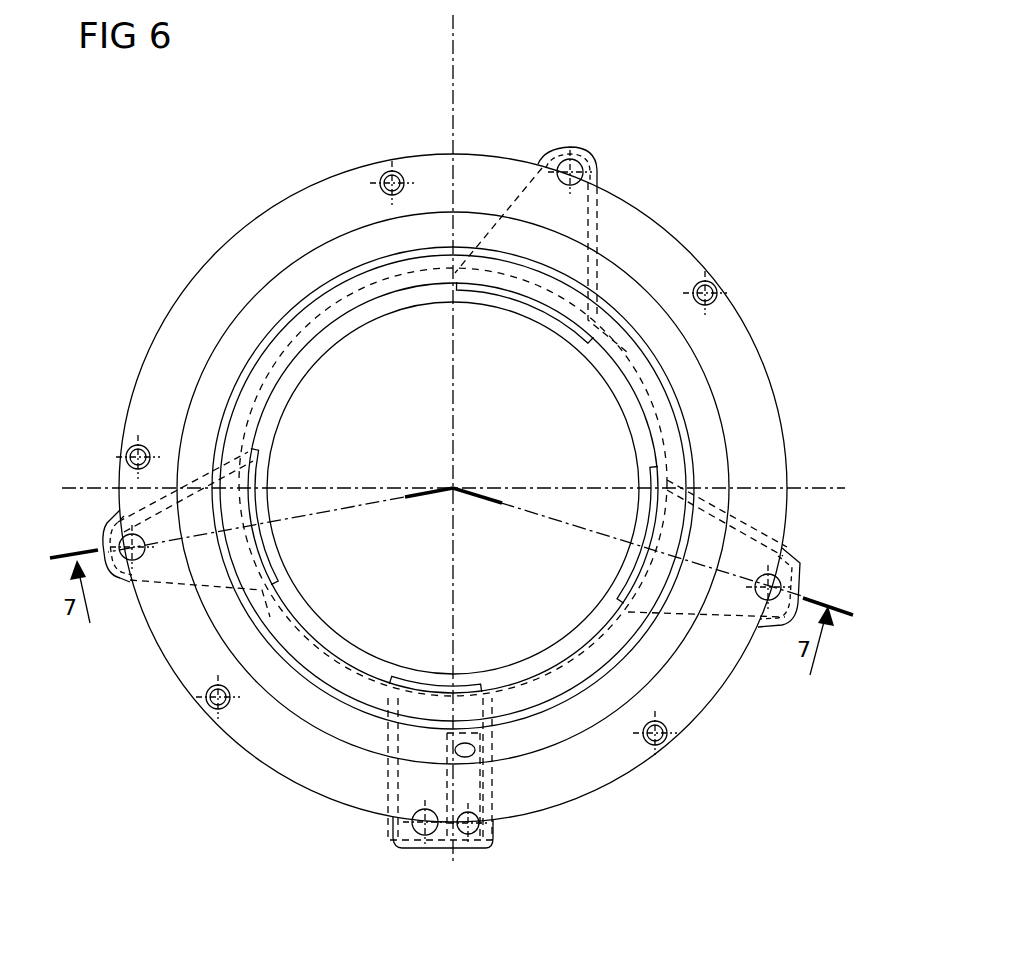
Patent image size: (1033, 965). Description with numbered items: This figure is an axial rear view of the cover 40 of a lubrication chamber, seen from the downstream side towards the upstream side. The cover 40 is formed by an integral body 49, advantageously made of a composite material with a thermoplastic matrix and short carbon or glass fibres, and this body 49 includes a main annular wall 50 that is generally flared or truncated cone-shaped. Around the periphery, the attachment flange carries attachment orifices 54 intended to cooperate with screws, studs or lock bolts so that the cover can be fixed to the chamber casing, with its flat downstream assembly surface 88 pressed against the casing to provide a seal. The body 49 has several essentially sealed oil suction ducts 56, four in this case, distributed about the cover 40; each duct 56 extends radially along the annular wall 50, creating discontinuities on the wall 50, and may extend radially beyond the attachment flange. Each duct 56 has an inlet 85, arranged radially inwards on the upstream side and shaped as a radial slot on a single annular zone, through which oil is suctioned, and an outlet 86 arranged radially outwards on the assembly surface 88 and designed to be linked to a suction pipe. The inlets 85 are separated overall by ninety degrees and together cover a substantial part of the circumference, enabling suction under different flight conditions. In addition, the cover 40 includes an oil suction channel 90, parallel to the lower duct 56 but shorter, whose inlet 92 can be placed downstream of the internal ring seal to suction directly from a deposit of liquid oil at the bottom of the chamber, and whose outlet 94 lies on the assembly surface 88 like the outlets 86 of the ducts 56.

The cover 40 is at (181, 205).
The integral body 49 is at (698, 138).
The main annular wall 50 is at (317, 308).
The attachment orifices 54 is at (386, 178).
The oil suction duct 56 is at (530, 247).
The inlet 85 is at (522, 298).
The outlet 86 is at (572, 160).
The assembly surface 88 is at (178, 327).
The oil suction channel 90 is at (490, 828).
The inlet 92 is at (470, 752).
The outlet 94 is at (470, 838).